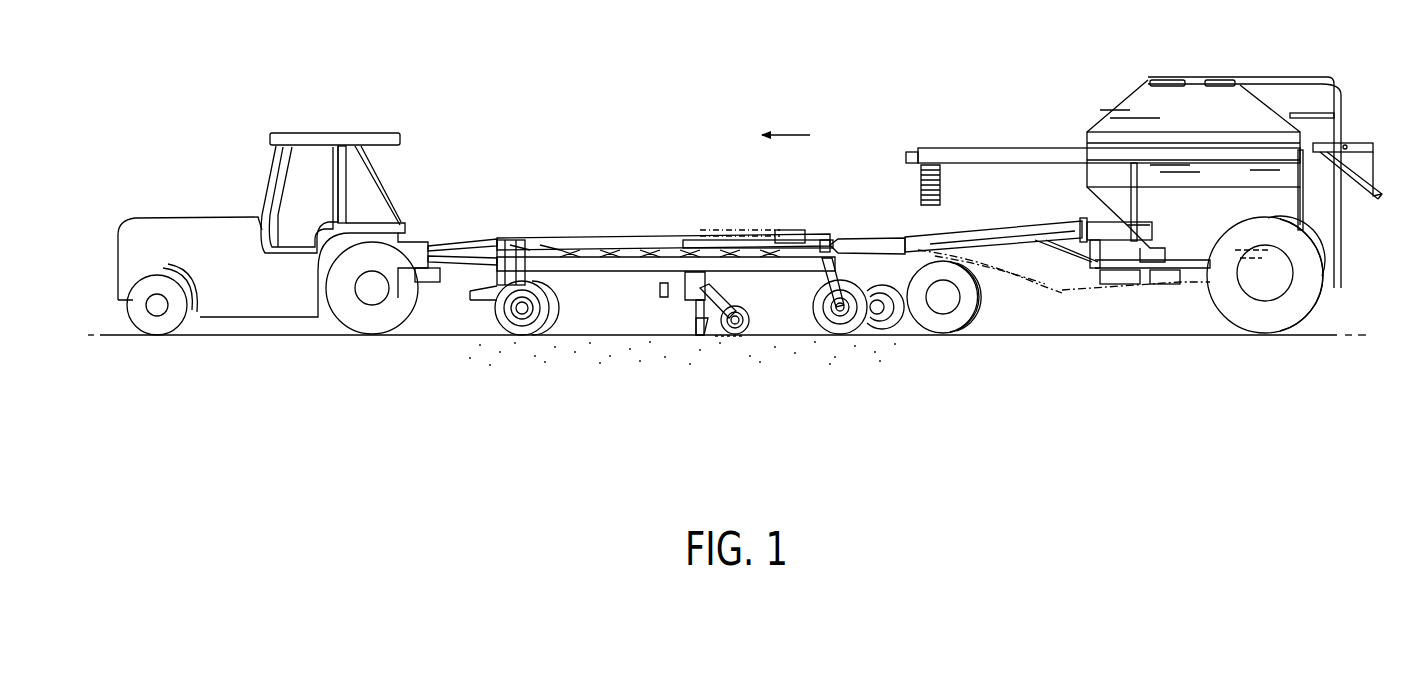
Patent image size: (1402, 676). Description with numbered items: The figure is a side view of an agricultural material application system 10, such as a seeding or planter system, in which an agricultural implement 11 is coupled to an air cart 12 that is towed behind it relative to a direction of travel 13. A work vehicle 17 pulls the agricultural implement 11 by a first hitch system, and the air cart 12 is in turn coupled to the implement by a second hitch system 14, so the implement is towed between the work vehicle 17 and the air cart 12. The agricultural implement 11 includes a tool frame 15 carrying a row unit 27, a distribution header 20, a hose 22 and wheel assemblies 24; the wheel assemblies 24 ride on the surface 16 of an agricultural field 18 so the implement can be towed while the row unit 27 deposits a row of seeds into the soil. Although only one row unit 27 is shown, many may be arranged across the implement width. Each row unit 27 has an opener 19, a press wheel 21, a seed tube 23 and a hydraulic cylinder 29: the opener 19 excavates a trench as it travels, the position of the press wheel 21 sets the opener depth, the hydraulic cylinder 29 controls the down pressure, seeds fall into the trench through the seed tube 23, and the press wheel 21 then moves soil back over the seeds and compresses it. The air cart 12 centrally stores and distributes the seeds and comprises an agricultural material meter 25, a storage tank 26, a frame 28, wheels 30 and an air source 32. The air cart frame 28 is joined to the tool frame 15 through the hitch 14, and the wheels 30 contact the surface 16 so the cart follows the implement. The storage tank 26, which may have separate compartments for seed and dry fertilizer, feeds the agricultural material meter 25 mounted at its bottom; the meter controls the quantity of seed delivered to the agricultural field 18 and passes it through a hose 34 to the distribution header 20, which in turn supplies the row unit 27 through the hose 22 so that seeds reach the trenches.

The agricultural material application system 10 is at (663, 193).
The agricultural implement 11 is at (585, 235).
The air cart 12 is at (1116, 74).
The direction of travel 13 is at (795, 135).
The second hitch system 14 is at (826, 243).
The tool frame 15 is at (690, 250).
The surface 16 is at (1115, 336).
The work vehicle 17 is at (325, 118).
The agricultural field 18 is at (950, 449).
The opener 19 is at (692, 336).
The distribution header 20 is at (795, 230).
The press wheel 21 is at (749, 324).
The hose 22 is at (738, 235).
The seed tube 23 is at (726, 342).
The wheel assemblies 24 is at (520, 338).
The agricultural material meter 25 is at (1160, 256).
The storage tank 26 is at (1140, 105).
The row unit 27 is at (676, 314).
The frame 28 is at (985, 232).
The hydraulic cylinder 29 is at (675, 360).
The wheels 30 is at (985, 305).
The air source 32 is at (1315, 224).
The hose 34 is at (1040, 285).